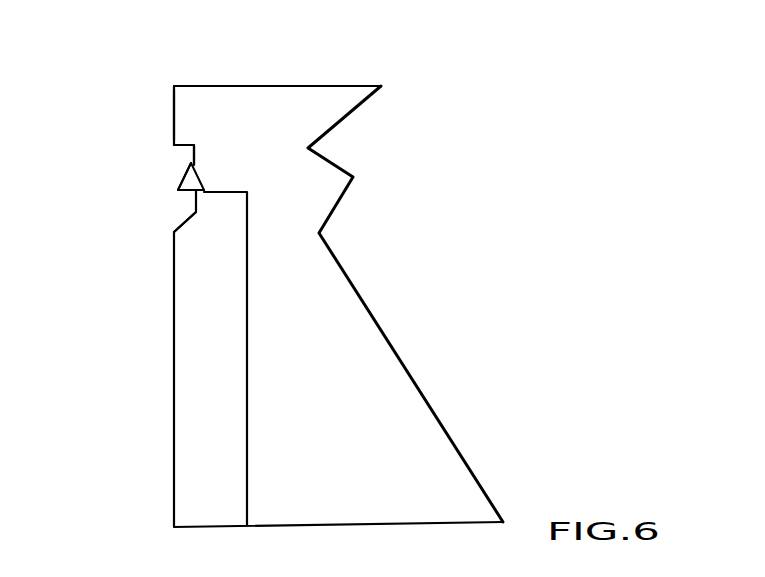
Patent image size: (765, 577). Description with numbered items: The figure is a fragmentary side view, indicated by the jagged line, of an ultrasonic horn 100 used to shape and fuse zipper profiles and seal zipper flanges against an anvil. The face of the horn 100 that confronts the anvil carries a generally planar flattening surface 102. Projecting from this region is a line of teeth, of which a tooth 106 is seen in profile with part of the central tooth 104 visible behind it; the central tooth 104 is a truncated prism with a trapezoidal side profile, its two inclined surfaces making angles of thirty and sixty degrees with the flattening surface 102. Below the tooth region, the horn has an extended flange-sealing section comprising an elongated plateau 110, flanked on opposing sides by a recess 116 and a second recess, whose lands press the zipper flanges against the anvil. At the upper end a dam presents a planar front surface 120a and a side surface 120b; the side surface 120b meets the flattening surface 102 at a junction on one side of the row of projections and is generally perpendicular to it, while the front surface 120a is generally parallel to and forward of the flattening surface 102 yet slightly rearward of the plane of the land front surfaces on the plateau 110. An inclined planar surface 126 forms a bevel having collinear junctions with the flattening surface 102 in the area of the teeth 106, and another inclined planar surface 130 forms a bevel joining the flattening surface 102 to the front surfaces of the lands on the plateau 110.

The horn 100 is at (293, 86).
The elongated plateau 110 is at (205, 486).
The recess 116 is at (227, 399).
The inclined planar surface 126 is at (203, 187).
The front surface 120a is at (173, 112).
The side surface 120b is at (175, 148).
The flattening surface 102 is at (192, 157).
The tooth 106 is at (187, 168).
The central tooth 104 is at (190, 192).
The inclined planar surface 130 is at (182, 220).